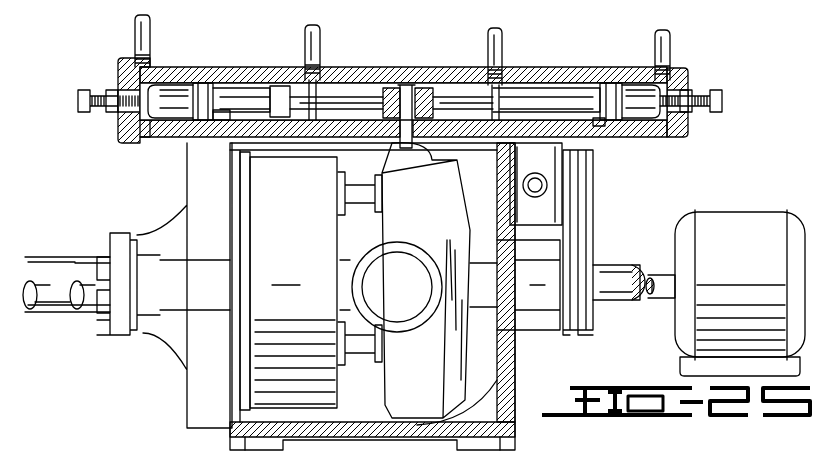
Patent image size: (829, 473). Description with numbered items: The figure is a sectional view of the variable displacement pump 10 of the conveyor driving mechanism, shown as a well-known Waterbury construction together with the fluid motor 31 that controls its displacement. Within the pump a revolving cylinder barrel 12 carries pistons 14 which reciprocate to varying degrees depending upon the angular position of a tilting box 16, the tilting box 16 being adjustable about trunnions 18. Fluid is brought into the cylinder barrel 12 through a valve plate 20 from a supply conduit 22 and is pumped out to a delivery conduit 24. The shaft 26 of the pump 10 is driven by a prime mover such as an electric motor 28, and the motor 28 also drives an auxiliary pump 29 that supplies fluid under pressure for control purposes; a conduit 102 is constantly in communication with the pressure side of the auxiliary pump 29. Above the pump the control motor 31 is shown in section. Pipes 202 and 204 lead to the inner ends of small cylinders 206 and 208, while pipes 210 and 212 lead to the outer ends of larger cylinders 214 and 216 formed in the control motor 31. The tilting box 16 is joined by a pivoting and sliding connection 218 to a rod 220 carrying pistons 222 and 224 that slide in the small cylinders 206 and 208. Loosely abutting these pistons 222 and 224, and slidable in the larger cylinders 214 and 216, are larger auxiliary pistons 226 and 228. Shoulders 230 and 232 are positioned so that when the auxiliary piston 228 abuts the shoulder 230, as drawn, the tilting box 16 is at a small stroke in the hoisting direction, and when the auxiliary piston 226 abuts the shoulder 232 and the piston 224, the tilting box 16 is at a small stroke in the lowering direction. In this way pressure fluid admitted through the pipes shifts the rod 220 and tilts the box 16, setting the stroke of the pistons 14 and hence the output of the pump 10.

The variable displacement pump 10 is at (348, 428).
The revolving cylinder barrel 12 is at (288, 281).
The pistons 14 is at (342, 180).
The tilting box 16 is at (426, 280).
The trunnions 18 is at (397, 287).
The valve plate 20 is at (184, 285).
The supply conduit 22 is at (40, 257).
The delivery conduit 24 is at (95, 292).
The shaft 26 is at (618, 268).
The electric motor 28 is at (725, 293).
The auxiliary pump 29 is at (536, 184).
The fluid motor 31 is at (405, 75).
The conduit 102 is at (536, 196).
The pipe 202 is at (486, 36).
The pipe 204 is at (322, 30).
The small cylinder 206 is at (285, 86).
The small cylinder 208 is at (522, 95).
The pipe 210 is at (672, 46).
The pipe 212 is at (133, 30).
The larger cylinder 214 is at (645, 128).
The larger cylinder 216 is at (165, 128).
The pivoting and sliding connection 218 is at (384, 120).
The rod 220 is at (347, 97).
The piston 222 is at (246, 86).
The piston 224 is at (565, 95).
The larger auxiliary piston 226 is at (614, 82).
The larger auxiliary piston 228 is at (202, 82).
The shoulder 230 is at (226, 122).
The shoulder 232 is at (600, 126).